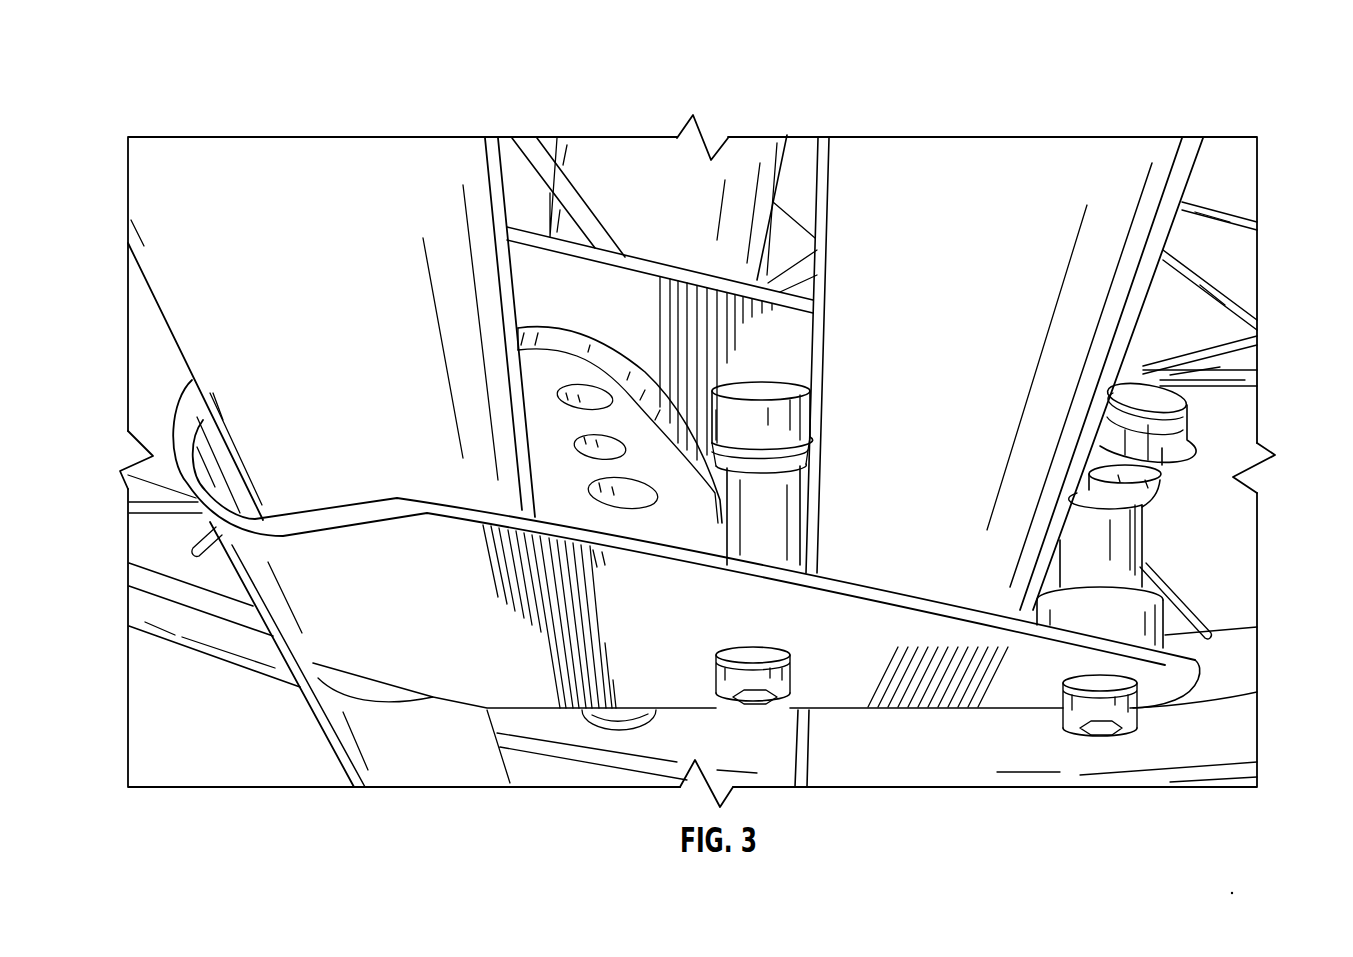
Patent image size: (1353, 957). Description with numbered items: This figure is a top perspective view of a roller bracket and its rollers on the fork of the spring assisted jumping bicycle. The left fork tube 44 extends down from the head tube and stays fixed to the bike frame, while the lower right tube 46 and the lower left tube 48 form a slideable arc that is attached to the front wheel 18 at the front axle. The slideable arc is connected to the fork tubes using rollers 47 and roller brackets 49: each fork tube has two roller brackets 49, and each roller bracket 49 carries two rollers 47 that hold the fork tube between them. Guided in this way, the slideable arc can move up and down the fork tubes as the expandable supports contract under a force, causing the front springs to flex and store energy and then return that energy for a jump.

The front wheel 18 is at (158, 562).
The left fork tube 44 is at (1072, 176).
The lower right tube 46 is at (595, 157).
The roller 47 is at (1127, 623).
The lower left tube 48 is at (362, 167).
The roller bracket 49 is at (860, 653).